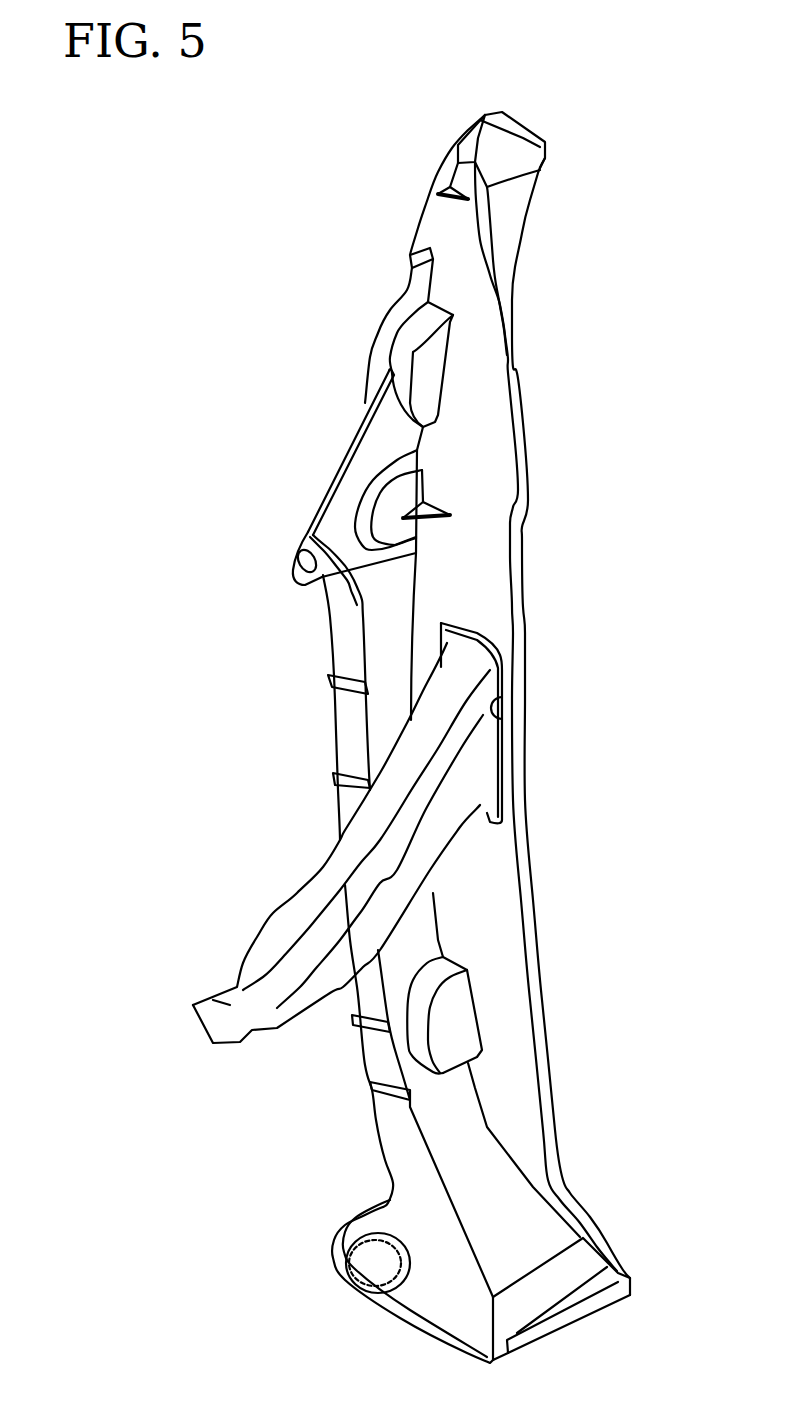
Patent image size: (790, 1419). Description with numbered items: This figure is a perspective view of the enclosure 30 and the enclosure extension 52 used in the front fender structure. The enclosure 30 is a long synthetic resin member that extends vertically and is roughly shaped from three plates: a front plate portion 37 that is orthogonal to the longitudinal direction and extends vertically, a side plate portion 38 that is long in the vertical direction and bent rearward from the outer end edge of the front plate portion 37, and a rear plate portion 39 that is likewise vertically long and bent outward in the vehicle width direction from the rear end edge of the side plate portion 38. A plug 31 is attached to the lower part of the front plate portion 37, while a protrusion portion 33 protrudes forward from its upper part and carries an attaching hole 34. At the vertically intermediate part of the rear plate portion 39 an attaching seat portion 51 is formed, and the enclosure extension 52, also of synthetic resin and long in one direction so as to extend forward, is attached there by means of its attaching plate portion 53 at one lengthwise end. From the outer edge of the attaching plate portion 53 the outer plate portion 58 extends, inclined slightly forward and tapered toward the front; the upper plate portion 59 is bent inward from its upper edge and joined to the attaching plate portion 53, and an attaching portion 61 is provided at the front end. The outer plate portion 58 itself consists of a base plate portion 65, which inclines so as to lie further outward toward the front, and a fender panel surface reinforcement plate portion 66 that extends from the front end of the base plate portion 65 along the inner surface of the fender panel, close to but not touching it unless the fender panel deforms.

The enclosure 30 is at (543, 430).
The plug 31 is at (367, 1280).
The protrusion portion 33 is at (310, 531).
The attaching hole 34 is at (300, 556).
The front plate portion 37 is at (403, 1153).
The side plate portion 38 is at (460, 1125).
The rear plate portion 39 is at (496, 932).
The attaching seat portion 51 is at (490, 717).
The enclosure extension 52 is at (276, 911).
The attaching plate portion 53 is at (438, 647).
The outer plate portion 58 is at (440, 830).
The upper plate portion 59 is at (330, 867).
The attaching portion 61 is at (227, 987).
The base plate portion 65 is at (462, 785).
The fender panel surface reinforcement plate portion 66 is at (305, 987).